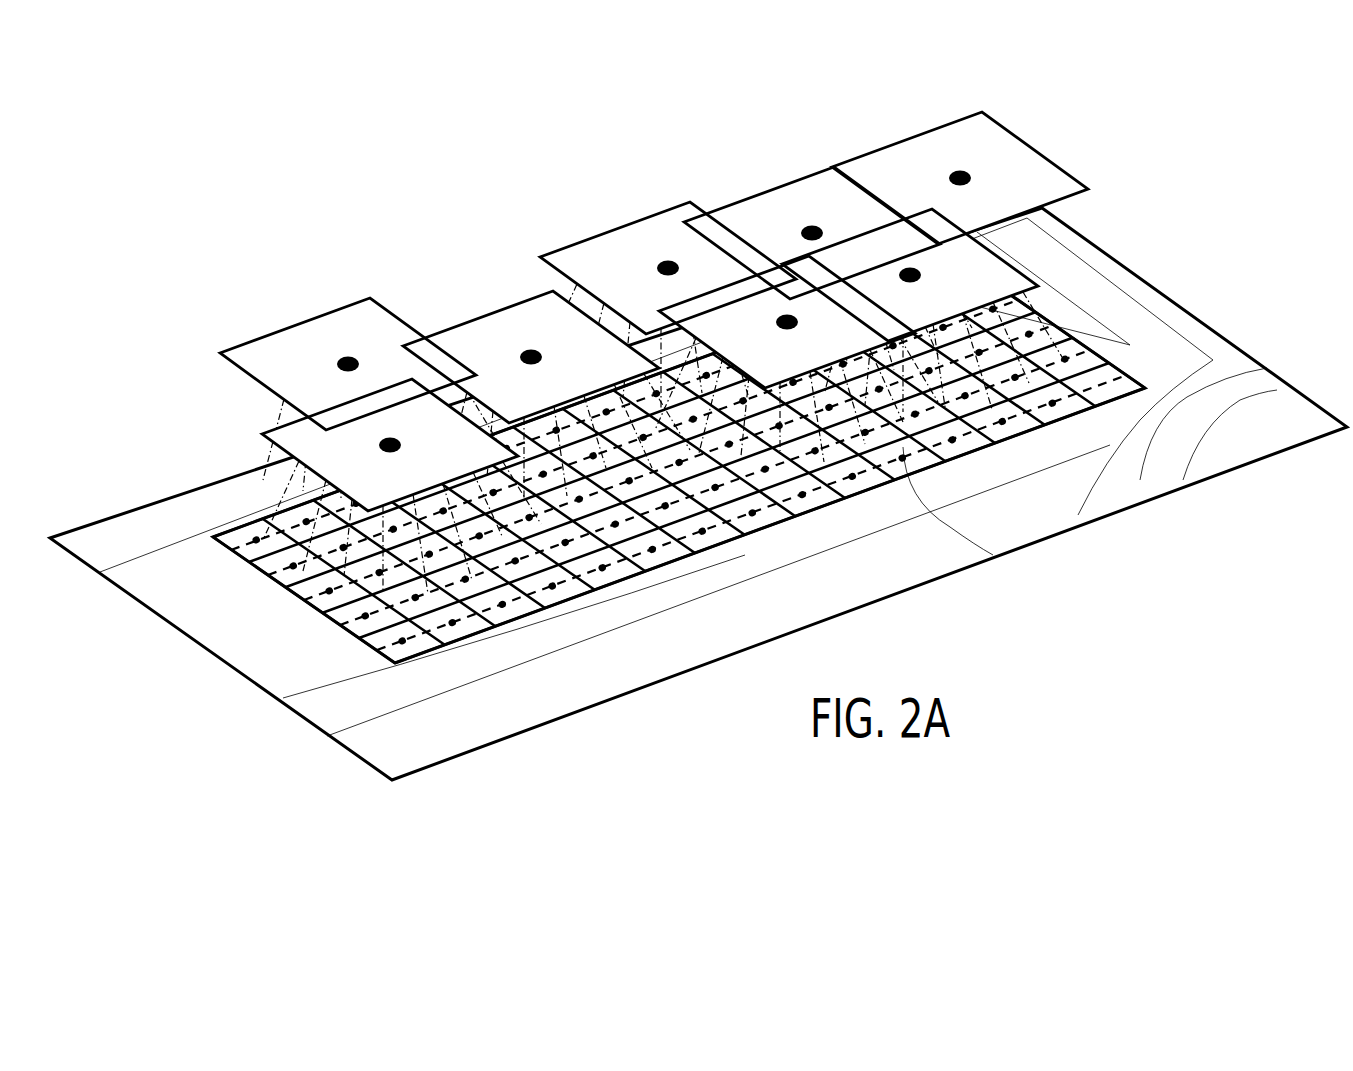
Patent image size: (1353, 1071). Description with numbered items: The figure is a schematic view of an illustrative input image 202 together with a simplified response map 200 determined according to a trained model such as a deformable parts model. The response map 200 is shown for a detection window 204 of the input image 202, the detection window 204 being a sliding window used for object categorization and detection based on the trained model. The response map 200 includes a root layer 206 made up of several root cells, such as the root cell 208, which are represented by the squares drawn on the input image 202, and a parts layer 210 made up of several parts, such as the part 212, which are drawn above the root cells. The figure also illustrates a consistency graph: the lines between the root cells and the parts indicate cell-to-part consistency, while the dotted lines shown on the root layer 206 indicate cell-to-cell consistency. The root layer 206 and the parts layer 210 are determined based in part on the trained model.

The response map 200 is at (698, 432).
The input image 202 is at (133, 540).
The detection window 204 is at (247, 580).
The root layer 206 is at (403, 673).
The root cell 208 is at (242, 537).
The parts layer 210 is at (635, 298).
The part 212 is at (329, 364).